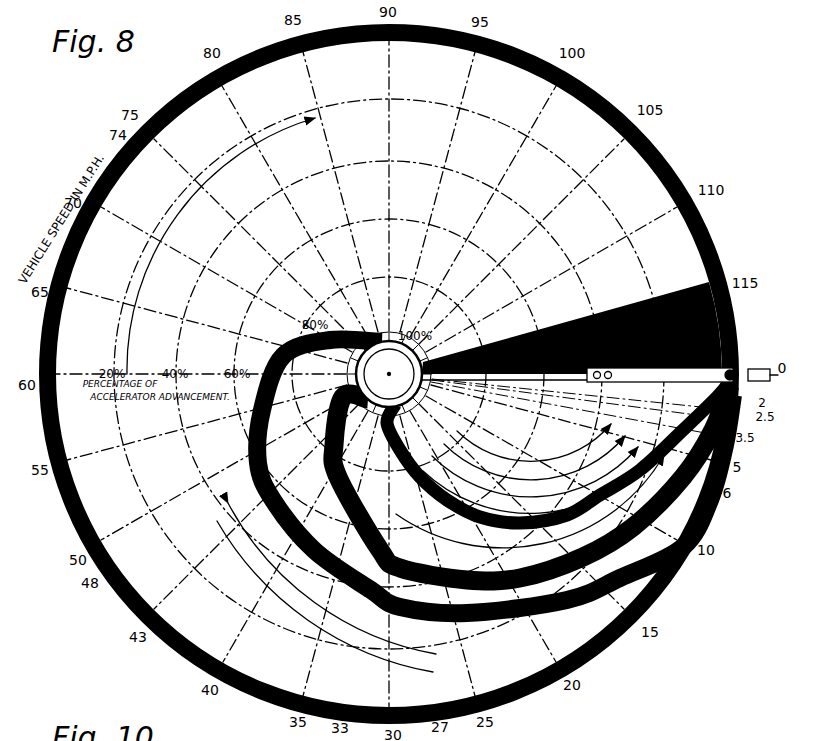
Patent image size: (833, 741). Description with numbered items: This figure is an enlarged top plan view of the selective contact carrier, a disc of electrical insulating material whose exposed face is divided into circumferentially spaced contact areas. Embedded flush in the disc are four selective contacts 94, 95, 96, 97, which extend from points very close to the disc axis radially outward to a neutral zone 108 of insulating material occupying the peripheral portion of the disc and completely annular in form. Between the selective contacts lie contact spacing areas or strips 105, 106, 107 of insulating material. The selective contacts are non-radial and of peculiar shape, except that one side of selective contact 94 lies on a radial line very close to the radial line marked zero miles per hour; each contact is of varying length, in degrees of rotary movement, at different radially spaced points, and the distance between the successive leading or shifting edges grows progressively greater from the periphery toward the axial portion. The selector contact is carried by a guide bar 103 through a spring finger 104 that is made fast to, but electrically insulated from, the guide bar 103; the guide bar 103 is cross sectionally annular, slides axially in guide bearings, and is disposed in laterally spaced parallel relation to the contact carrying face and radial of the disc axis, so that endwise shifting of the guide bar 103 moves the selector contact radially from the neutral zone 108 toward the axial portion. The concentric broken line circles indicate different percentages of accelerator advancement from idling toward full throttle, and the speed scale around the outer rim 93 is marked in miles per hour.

The speed dial ring 93 is at (606, 84).
The selective contact 94 is at (536, 473).
The selective contact 95 is at (531, 483).
The selective contact 96 is at (495, 476).
The selective contact 97 is at (381, 374).
The guide bar 103 is at (752, 362).
The spring finger 104 is at (722, 378).
The contact spacing strip 105 is at (410, 470).
The contact spacing strip 106 is at (383, 547).
The contact spacing strip 107 is at (272, 489).
The neutral zone 108 is at (660, 178).